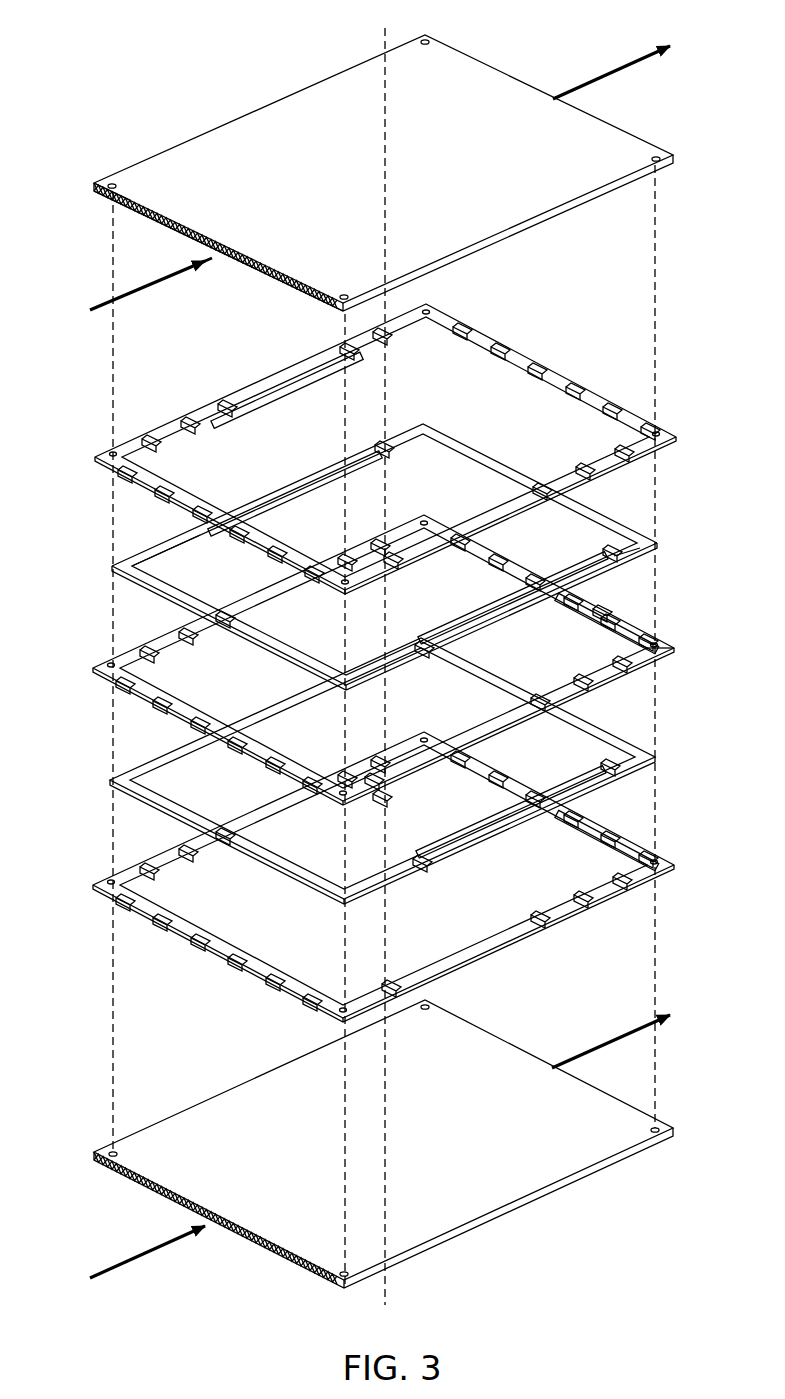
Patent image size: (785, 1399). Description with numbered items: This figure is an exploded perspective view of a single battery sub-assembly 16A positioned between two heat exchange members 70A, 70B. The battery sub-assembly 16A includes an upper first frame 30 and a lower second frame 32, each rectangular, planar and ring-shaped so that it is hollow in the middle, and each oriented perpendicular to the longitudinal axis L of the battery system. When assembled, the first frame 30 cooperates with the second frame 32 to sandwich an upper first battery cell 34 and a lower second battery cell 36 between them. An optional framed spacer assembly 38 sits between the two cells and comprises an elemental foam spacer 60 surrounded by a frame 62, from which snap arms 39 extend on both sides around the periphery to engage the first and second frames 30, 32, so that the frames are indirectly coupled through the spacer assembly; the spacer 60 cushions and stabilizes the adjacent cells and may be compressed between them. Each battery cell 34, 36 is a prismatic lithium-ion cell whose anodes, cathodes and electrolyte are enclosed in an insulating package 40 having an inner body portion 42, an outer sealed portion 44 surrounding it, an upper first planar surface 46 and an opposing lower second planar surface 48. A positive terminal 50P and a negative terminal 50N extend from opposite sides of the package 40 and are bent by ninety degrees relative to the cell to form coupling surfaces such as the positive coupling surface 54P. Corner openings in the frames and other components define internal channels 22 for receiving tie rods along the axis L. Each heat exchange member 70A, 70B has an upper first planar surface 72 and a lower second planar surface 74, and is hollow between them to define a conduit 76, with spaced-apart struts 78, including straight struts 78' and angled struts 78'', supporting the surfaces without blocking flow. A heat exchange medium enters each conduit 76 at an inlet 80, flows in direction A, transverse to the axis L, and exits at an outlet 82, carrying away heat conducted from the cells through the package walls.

The internal channel 22 is at (385, 188).
The first generally planar surface 72 is at (250, 130).
The heat exchange member 70A is at (482, 80).
The heat exchange member 70B is at (523, 1207).
The second generally planar surface 74 is at (257, 277).
The heat exchange pathway or conduit 76 is at (135, 222).
The struts 78 is at (244, 249).
The straight struts 78' is at (296, 310).
The angled struts 78'' is at (151, 200).
The inlet 80 is at (201, 281).
The outlet 82 is at (558, 78).
The direction arrows A is at (122, 297).
The longitudinal axis L is at (382, 37).
The battery sub-assembly 16A is at (678, 383).
The first frame 30 is at (152, 487).
The second frame 32 is at (143, 917).
The first battery cell 34 is at (165, 568).
The second battery cell 36 is at (167, 783).
The framed spacer assembly 38 is at (399, 681).
The snap arms 39 is at (373, 773).
The package 40 is at (398, 540).
The inner body portion 42 is at (470, 472).
The outer sealed portion 44 is at (403, 433).
The first generally planar surface 46 is at (265, 510).
The second generally planar surface 48 is at (262, 645).
The negative terminal 50N is at (310, 470).
The positive terminal 50P is at (513, 832).
The positive coupling surface 54P is at (460, 645).
The spacer 60 is at (612, 643).
The frame 62 is at (672, 658).